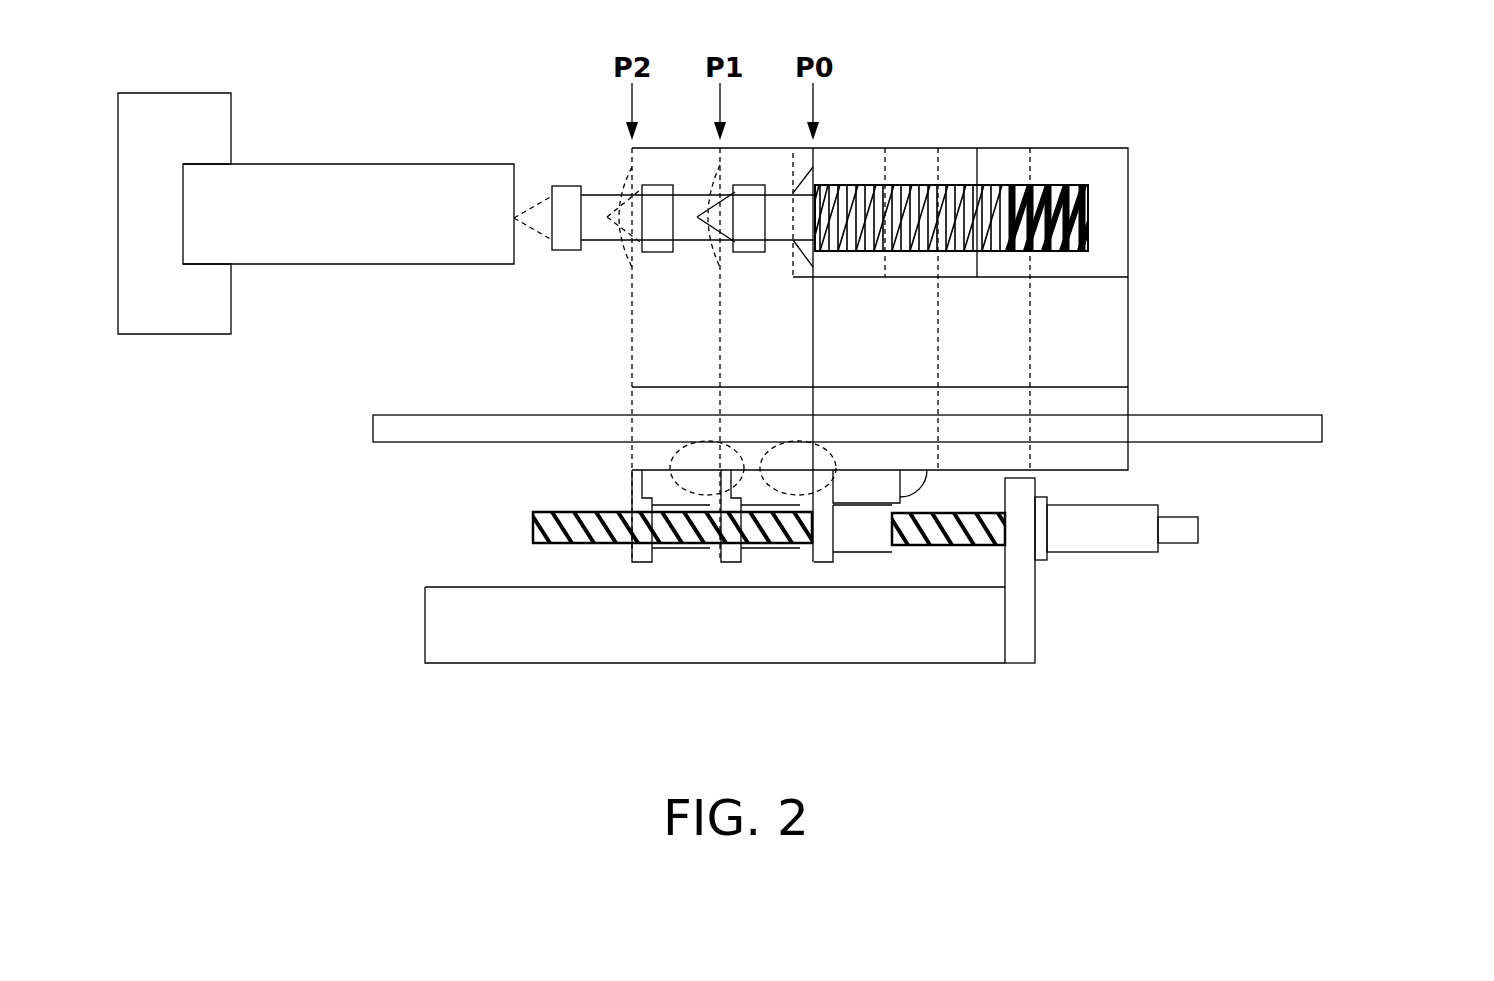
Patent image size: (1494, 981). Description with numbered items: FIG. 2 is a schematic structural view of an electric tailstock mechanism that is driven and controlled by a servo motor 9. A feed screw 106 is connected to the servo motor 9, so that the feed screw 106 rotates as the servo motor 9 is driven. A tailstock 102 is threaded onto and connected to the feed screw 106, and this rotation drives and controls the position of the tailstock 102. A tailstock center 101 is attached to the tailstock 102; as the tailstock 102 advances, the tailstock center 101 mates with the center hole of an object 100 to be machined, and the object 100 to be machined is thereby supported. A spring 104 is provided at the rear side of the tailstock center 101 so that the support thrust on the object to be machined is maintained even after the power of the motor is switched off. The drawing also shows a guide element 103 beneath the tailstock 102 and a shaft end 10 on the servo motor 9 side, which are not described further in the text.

The object to be machined 100 is at (365, 180).
The tailstock center 101 is at (750, 190).
The tailstock 102 is at (1128, 290).
The guide rail 103 is at (1285, 410).
The spring 104 is at (1030, 168).
The feed screw 106 is at (560, 510).
The servo motor 9 is at (1120, 545).
The shaft end 10 is at (1185, 545).